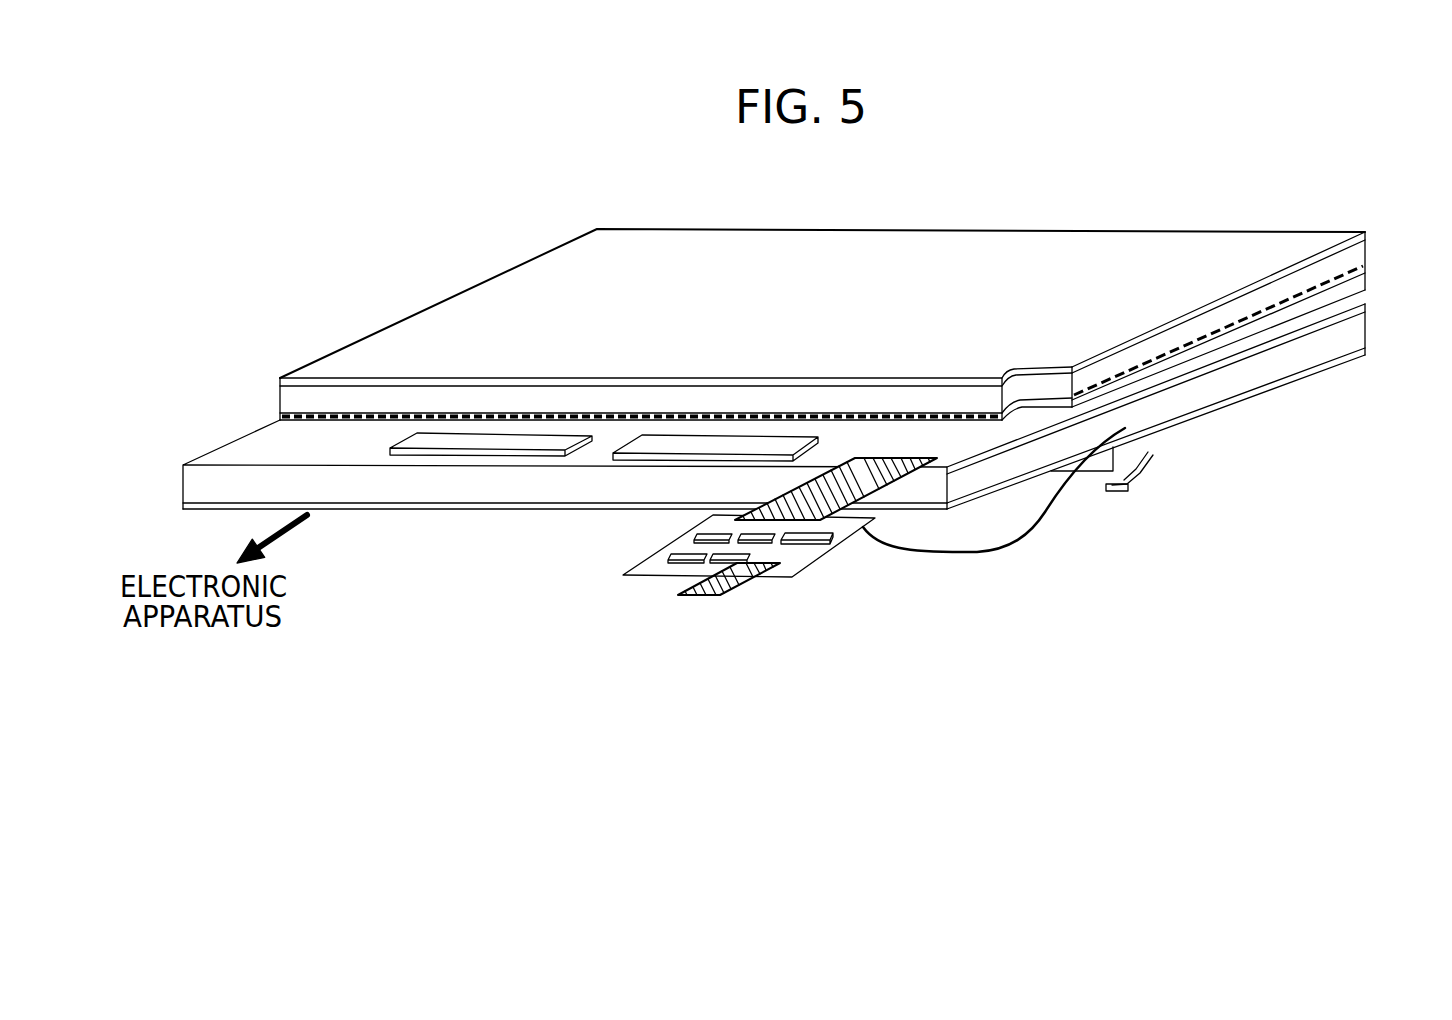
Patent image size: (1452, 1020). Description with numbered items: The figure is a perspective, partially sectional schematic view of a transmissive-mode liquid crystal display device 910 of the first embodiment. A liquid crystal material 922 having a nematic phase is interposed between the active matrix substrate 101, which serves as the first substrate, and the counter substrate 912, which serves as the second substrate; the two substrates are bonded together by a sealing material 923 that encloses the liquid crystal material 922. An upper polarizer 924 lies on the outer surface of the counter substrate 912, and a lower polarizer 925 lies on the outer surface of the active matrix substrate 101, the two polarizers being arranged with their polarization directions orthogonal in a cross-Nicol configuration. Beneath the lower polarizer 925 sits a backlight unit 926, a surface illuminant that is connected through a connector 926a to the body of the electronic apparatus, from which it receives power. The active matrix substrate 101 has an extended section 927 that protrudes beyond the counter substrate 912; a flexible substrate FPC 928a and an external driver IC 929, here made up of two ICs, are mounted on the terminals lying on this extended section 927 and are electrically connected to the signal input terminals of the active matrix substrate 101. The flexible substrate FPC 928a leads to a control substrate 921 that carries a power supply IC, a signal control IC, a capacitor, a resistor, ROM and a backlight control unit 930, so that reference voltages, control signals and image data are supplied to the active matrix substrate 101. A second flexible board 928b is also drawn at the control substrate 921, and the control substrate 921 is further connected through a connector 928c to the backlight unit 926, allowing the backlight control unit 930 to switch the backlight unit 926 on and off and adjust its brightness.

The liquid crystal display device 910 is at (405, 232).
The counter substrate 912 is at (1362, 257).
The active matrix substrate 101 is at (1362, 289).
The sealing material 923 is at (1278, 298).
The upper polarizer 924 is at (1230, 293).
The liquid crystal material 922 is at (1034, 400).
The extended section 927 is at (268, 447).
The lower polarizer 925 is at (420, 509).
The backlight unit 926 is at (1310, 377).
The connector 926a is at (1135, 486).
The external driver IC 929 is at (655, 455).
The control substrate 921 is at (817, 568).
The backlight control unit 930 is at (835, 542).
The flexible substrate FPC 928a is at (790, 493).
The second flexible wiring board 928b is at (742, 574).
The connector 928c is at (1057, 510).